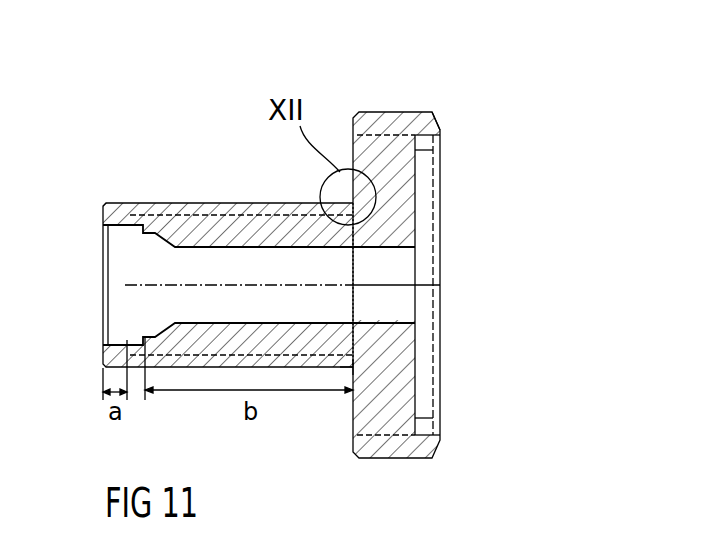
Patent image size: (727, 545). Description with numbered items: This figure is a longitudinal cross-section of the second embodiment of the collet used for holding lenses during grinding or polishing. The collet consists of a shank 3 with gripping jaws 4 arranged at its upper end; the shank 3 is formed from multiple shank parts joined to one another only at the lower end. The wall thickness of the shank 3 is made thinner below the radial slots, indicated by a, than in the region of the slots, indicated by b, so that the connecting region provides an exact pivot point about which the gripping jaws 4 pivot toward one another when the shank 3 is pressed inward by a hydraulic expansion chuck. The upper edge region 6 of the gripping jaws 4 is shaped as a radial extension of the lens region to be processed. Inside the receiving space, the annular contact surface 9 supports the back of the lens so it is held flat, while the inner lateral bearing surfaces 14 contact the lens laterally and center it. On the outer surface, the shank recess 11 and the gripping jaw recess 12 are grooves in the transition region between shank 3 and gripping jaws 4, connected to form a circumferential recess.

The shank 3 is at (148, 212).
The gripping jaws 4 is at (428, 448).
The upper edge region 6 is at (437, 122).
The contact surface 9 is at (416, 152).
The shank recess 11 is at (350, 369).
The gripping jaw recess 12 is at (348, 376).
The inner lateral bearing surface 14 is at (441, 430).